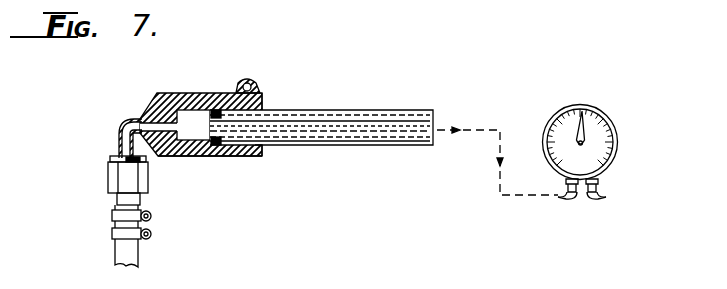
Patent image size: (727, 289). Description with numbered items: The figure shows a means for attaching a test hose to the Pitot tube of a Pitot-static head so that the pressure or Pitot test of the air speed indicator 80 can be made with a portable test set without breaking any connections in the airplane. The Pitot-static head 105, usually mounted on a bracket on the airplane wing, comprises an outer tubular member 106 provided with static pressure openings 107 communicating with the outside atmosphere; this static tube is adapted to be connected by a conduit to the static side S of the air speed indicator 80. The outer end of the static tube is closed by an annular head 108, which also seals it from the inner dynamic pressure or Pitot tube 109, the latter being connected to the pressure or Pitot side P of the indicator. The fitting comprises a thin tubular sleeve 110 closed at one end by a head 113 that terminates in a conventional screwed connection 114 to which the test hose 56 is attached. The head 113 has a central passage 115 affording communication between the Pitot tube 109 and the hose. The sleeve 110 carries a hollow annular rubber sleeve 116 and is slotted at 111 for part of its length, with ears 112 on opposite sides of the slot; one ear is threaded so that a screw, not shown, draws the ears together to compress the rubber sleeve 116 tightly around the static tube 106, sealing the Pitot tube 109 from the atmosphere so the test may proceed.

The test hose 56 is at (132, 253).
The air speed indicator 80 is at (612, 136).
The Pitot-static head 105 is at (414, 110).
The outer tubular member 106 is at (283, 146).
The static pressure openings 107 is at (318, 111).
The annular head 108 is at (218, 154).
The Pitot tube 109 is at (365, 122).
The tubular sleeve 110 is at (186, 157).
The slot 111 is at (262, 97).
The ears 112 is at (252, 80).
The head 113 is at (161, 94).
The screwed connection 114 is at (112, 158).
The central passage 115 is at (130, 119).
The rubber sleeve 116 is at (264, 158).